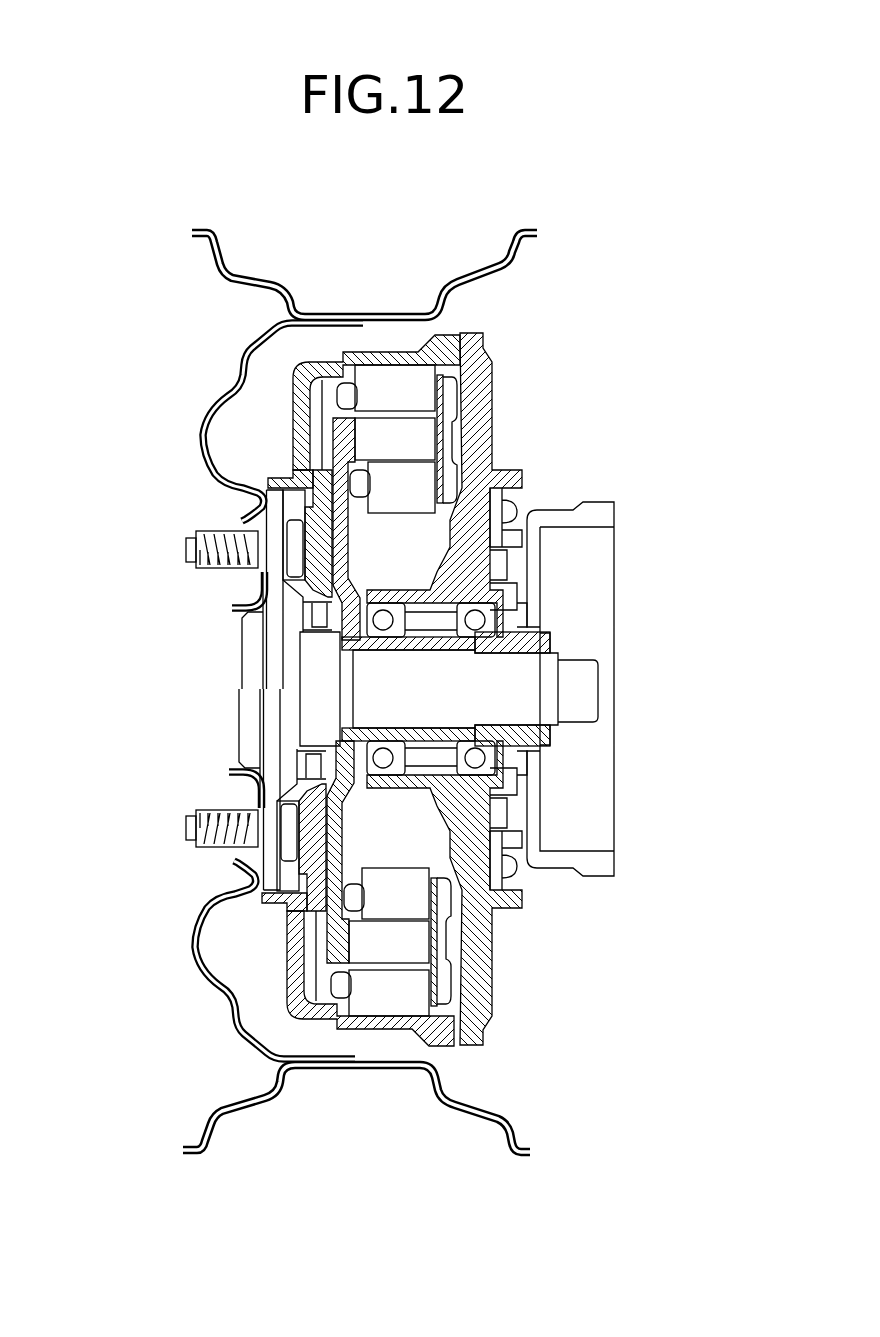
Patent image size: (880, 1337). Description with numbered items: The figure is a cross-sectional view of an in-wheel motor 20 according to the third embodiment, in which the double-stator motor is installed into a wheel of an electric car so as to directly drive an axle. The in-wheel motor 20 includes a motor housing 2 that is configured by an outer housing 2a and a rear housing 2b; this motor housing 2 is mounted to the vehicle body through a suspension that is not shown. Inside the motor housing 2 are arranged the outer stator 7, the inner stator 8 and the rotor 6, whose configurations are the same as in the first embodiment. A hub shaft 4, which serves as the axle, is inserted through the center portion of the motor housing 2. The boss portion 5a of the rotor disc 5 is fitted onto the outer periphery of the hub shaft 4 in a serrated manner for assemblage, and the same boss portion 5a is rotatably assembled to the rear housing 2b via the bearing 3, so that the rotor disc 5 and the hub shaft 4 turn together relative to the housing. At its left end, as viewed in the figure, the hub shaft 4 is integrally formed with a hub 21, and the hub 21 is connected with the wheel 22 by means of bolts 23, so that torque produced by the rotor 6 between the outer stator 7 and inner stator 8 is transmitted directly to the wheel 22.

The motor housing 2 is at (347, 197).
The outer housing 2a is at (387, 357).
The rear housing 2b is at (475, 350).
The bearing 3 is at (475, 620).
The hub shaft 4 is at (583, 704).
The rotor disc 5 is at (340, 513).
The boss portion 5a is at (552, 644).
The rotor 6 is at (412, 440).
The outer stator 7 is at (417, 391).
The inner stator 8 is at (413, 483).
The in-wheel motor 20 is at (624, 320).
The hub 21 is at (273, 660).
The wheel 22 is at (200, 452).
The bolts 23 is at (186, 545).